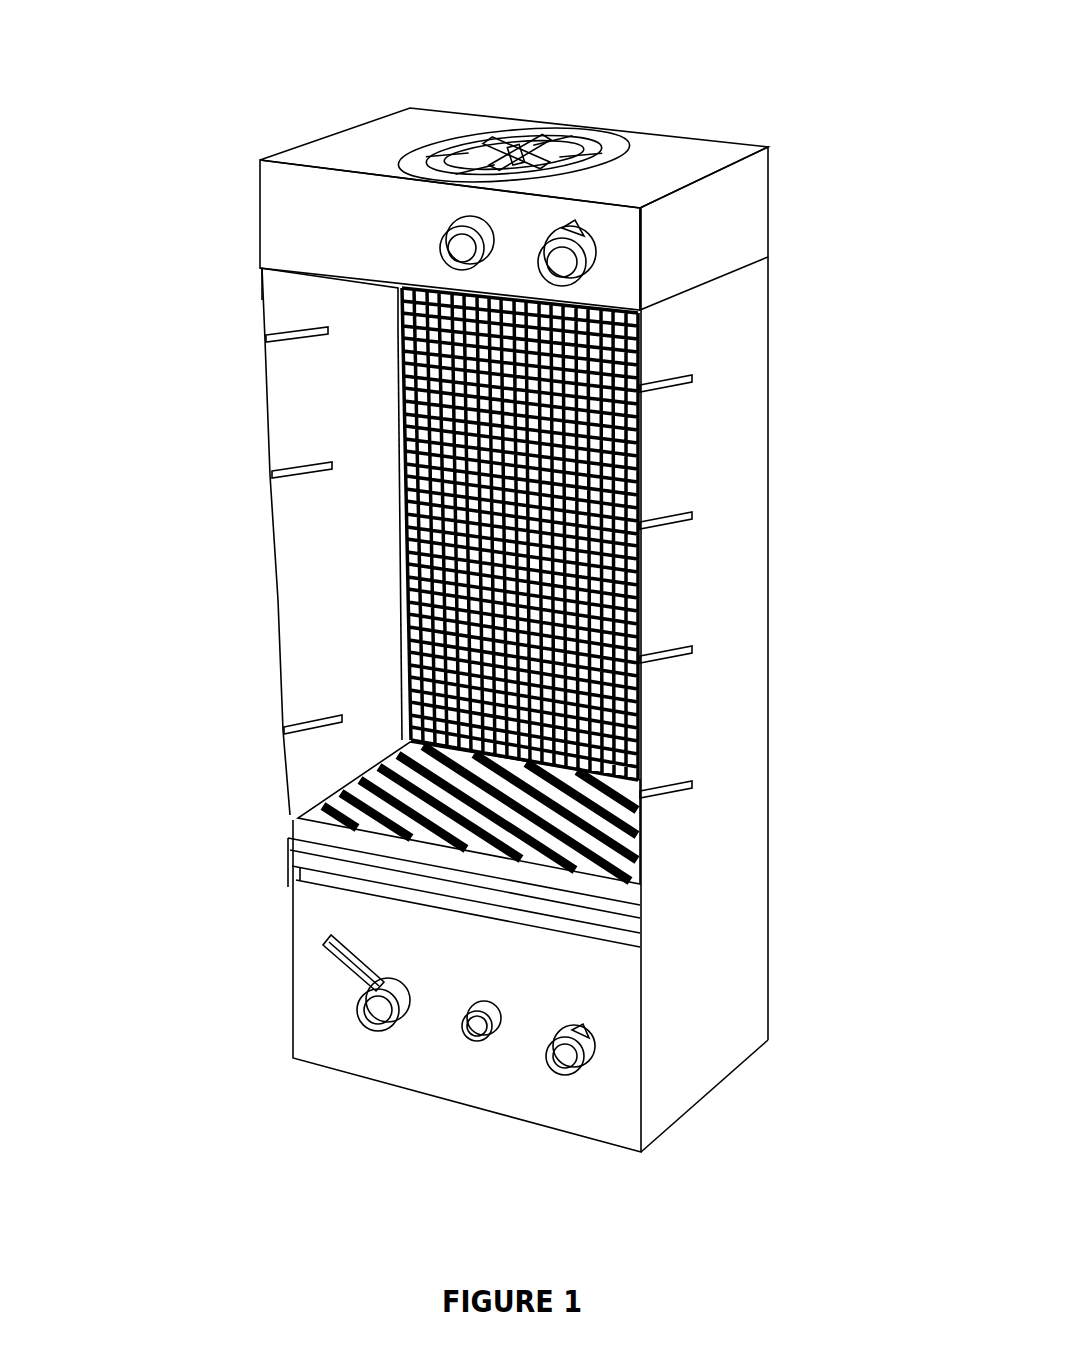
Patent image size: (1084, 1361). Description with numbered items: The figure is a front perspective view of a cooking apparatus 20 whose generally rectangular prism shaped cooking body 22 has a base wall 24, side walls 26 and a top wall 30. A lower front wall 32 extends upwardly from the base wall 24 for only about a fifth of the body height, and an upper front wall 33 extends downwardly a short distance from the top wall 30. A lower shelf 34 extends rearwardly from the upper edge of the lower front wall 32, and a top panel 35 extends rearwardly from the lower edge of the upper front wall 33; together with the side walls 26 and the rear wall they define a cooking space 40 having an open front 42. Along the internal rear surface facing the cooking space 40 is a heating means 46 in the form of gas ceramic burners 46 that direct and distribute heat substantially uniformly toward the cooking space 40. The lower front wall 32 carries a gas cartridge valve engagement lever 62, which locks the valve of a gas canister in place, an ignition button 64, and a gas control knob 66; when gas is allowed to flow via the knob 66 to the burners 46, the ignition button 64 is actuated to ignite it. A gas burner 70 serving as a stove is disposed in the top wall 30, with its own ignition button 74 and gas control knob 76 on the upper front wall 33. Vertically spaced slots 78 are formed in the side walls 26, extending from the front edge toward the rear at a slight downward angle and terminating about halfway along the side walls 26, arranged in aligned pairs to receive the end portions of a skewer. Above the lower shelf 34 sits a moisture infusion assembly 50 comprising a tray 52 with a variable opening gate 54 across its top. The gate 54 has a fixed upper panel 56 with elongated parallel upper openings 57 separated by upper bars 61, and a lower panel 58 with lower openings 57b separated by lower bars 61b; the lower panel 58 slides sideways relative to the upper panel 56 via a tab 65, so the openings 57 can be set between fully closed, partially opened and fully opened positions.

The cooking apparatus 20 is at (499, 608).
The cooking body 22 is at (499, 608).
The base wall 24 is at (420, 1100).
The side walls 26 is at (293, 517).
The top wall 30 is at (434, 181).
The lower front wall 32 is at (323, 1058).
The upper front wall 33 is at (295, 216).
The lower shelf 34 is at (322, 887).
The top panel 35 is at (313, 275).
The cooking space 40 is at (333, 408).
The open front 42 is at (255, 661).
The heating means 46 is at (460, 573).
The moisture infusion assembly 50 is at (522, 923).
The tray 52 is at (622, 927).
The variable opening gate 54 is at (374, 856).
The upper panel 56 is at (632, 892).
The upper openings 57 is at (640, 903).
The lower openings 57b is at (417, 830).
The lower panel 58 is at (635, 900).
The upper bars 61 is at (623, 860).
The lower bars 61b is at (446, 846).
The gas cartridge valve engagement lever 62 is at (383, 1013).
The ignition button 64 is at (478, 1030).
The tab 65 is at (542, 892).
The gas control knob 66 is at (568, 1060).
The gas burner 70 is at (533, 157).
The ignition button 74 is at (468, 237).
The gas control knob 76 is at (573, 262).
The slots 78 is at (273, 340).